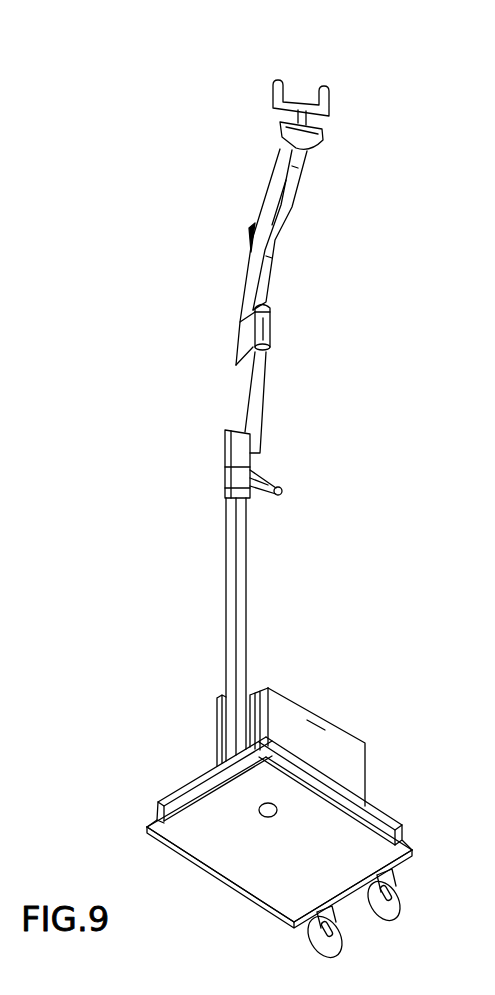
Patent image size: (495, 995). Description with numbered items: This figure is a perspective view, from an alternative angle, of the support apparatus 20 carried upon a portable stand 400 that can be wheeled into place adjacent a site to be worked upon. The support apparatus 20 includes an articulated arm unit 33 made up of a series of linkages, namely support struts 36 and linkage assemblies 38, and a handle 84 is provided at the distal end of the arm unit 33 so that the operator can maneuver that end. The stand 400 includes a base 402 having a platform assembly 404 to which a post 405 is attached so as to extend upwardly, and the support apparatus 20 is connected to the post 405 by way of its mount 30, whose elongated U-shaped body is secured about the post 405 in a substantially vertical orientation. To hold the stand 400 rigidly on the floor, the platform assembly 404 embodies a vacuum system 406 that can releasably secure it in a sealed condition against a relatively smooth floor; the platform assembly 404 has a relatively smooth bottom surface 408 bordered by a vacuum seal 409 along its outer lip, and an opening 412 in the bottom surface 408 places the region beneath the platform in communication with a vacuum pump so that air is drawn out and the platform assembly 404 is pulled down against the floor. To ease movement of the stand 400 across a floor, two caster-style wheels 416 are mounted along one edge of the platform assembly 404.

The handle 84 is at (305, 117).
The support apparatus 20 is at (313, 170).
The articulated arm unit 33 is at (203, 235).
The linkage assembly 38 is at (270, 282).
The support strut 36 is at (272, 320).
The mount 30 is at (223, 457).
The post 405 is at (223, 608).
The portable stand 400 is at (346, 558).
The vacuum system 406 is at (354, 710).
The base 402 is at (194, 781).
The platform assembly 404 is at (382, 812).
The vacuum seal 409 is at (177, 845).
The bottom surface 408 is at (243, 877).
The opening 412 is at (272, 817).
The caster-style wheels 416 is at (343, 958).